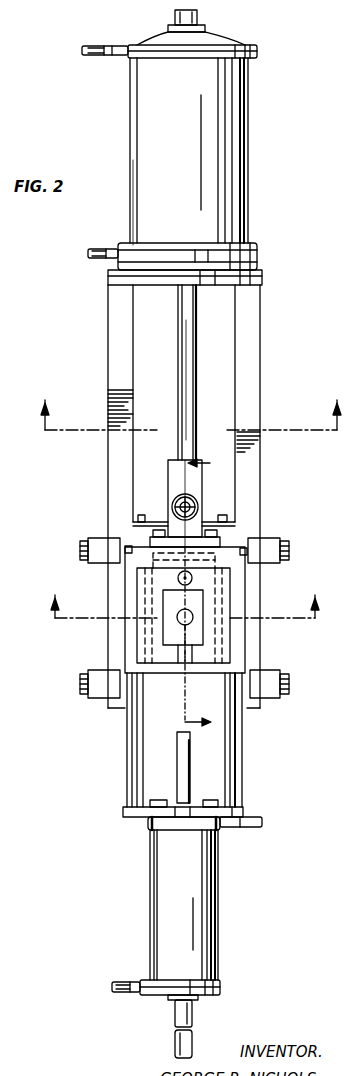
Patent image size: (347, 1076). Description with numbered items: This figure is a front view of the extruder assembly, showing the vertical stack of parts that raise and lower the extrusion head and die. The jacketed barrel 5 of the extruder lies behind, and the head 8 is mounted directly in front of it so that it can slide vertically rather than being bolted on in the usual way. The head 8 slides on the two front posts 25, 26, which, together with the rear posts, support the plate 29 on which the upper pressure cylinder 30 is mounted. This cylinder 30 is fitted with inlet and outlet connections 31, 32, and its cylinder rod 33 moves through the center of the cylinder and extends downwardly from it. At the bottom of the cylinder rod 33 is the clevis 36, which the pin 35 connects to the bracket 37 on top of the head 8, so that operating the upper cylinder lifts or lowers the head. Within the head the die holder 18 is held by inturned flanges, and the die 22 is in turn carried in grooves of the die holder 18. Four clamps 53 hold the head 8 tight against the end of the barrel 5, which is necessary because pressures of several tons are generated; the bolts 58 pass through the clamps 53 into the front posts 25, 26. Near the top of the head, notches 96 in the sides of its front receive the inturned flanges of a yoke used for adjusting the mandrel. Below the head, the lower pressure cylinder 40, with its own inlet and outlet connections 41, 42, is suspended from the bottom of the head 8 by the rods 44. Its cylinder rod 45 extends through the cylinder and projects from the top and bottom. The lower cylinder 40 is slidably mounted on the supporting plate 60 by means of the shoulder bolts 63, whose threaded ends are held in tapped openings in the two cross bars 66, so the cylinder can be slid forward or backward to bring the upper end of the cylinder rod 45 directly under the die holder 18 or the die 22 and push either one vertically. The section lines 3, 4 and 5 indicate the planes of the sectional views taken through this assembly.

The section line 3- 3 is at (183, 618).
The section line 4- 4 is at (203, 600).
The jacketed barrel 5 is at (188, 428).
The head 8 is at (120, 580).
The die holder 18 is at (140, 650).
The die 22 is at (196, 603).
The post 25 is at (112, 338).
The post 26 is at (254, 348).
The plate 29 is at (108, 283).
The upper pressure cylinder 30 is at (140, 118).
The inlet and outlet connection 31 is at (97, 248).
The inlet and outlet connection 32 is at (94, 45).
The cylinder rod 33 is at (181, 325).
The pin 35 is at (198, 503).
The clevis 36 is at (170, 482).
The bracket 37 is at (210, 545).
The pressure cylinder 40 is at (157, 906).
The inlet and outlet connection 41 is at (122, 984).
The inlet and outlet connection 42 is at (246, 826).
The rods 44 is at (130, 742).
The cylinder rod 45 is at (180, 762).
The clamps 53 is at (97, 538).
The bolts 58 is at (80, 549).
The supporting plate 60 is at (125, 813).
The shoulder bolts 63 is at (150, 823).
The cross bars 66 is at (152, 803).
The notches 96 is at (127, 546).